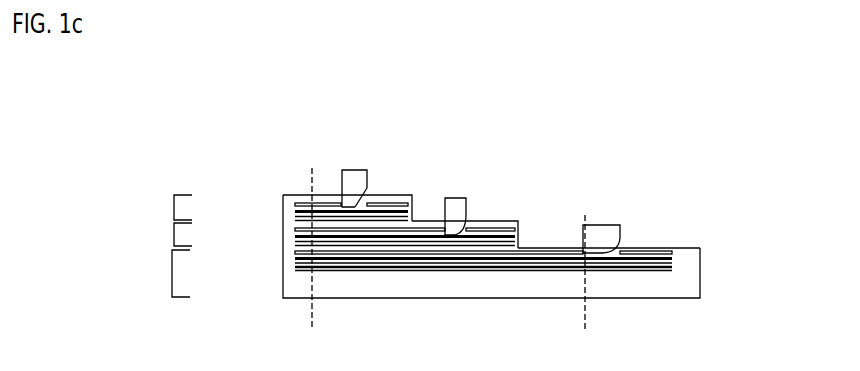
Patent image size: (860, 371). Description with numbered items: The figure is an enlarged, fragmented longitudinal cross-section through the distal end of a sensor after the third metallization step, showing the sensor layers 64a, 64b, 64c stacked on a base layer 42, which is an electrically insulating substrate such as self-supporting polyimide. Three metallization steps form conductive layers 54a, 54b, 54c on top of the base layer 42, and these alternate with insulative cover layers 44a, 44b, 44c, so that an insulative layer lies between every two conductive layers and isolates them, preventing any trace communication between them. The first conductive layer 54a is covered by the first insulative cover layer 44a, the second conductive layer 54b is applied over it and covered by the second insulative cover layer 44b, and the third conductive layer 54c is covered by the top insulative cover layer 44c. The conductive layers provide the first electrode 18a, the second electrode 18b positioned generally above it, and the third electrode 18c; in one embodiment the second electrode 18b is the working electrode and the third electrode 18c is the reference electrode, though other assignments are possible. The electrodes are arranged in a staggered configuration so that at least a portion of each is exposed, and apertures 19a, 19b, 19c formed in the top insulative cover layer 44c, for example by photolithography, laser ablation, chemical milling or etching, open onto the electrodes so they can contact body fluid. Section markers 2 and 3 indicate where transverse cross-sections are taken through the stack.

The base layer 42 is at (700, 290).
The first conductive layer 54a is at (659, 250).
The second conductive layer 54b is at (503, 235).
The third conductive layer 54c is at (411, 196).
The first insulative cover layer 44a is at (283, 258).
The second insulative cover layer 44b is at (283, 232).
The top insulative cover layer 44c is at (283, 208).
The first sensor layer 64a is at (165, 273).
The second sensor layer 64b is at (166, 233).
The third sensor layer 64c is at (166, 207).
The first aperture 19a is at (597, 225).
The second aperture 19b is at (455, 198).
The third aperture 19c is at (355, 170).
The first electrode 18a is at (614, 247).
The second electrode 18b is at (462, 223).
The third electrode 18c is at (359, 201).
The section line 2- 2 is at (322, 178).
The section line 3- 3 is at (595, 233).